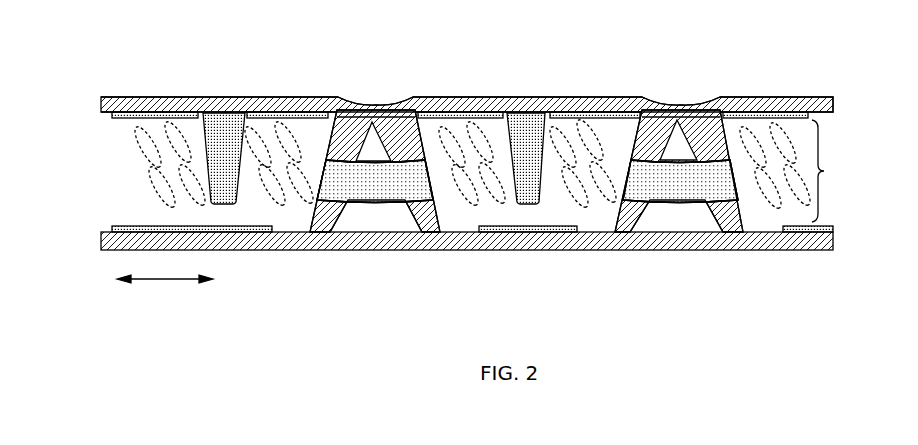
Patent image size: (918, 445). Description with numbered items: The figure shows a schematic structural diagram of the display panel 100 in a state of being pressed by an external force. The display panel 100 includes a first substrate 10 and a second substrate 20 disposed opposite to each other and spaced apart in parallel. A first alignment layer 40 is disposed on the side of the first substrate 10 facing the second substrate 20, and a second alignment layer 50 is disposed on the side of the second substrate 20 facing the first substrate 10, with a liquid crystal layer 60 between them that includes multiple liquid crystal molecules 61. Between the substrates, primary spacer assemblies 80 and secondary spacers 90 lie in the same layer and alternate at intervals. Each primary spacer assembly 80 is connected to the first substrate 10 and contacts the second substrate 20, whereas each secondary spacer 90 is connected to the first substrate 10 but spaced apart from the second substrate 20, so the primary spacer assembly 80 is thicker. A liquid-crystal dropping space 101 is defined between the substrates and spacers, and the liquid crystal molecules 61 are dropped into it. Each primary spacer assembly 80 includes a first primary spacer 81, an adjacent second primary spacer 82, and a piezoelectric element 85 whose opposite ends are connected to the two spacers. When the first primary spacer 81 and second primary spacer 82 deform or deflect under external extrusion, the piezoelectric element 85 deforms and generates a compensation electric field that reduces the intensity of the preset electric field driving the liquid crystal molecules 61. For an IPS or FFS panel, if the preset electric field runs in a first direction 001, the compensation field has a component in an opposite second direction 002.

The display panel 100 is at (490, 18).
The first substrate 10 is at (790, 108).
The second substrate 20 is at (827, 238).
The first alignment layer 40 is at (755, 112).
The second alignment layer 50 is at (792, 232).
The liquid crystal layer 60 is at (489, 200).
The liquid crystal molecules 61 is at (466, 192).
The primary spacer assembly 80 is at (659, 128).
The first primary spacer 81 is at (318, 228).
The second primary spacer 82 is at (428, 224).
The piezoelectric element 85 is at (351, 193).
The secondary spacer 90 is at (530, 128).
The liquid-crystal dropping space 101 is at (511, 204).
The first direction 001 is at (160, 291).
The second direction 002 is at (212, 290).